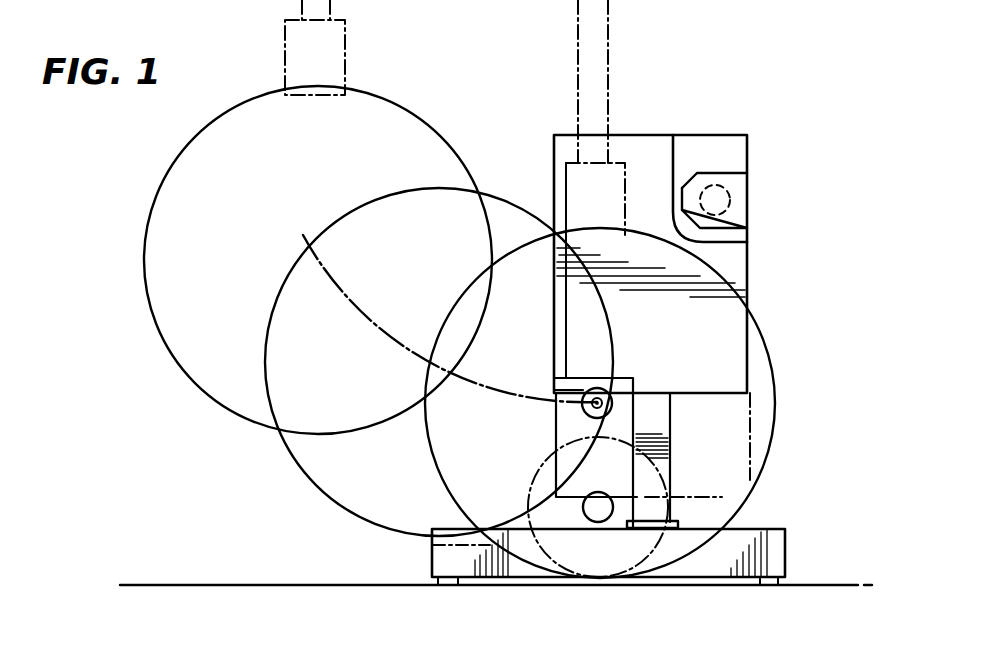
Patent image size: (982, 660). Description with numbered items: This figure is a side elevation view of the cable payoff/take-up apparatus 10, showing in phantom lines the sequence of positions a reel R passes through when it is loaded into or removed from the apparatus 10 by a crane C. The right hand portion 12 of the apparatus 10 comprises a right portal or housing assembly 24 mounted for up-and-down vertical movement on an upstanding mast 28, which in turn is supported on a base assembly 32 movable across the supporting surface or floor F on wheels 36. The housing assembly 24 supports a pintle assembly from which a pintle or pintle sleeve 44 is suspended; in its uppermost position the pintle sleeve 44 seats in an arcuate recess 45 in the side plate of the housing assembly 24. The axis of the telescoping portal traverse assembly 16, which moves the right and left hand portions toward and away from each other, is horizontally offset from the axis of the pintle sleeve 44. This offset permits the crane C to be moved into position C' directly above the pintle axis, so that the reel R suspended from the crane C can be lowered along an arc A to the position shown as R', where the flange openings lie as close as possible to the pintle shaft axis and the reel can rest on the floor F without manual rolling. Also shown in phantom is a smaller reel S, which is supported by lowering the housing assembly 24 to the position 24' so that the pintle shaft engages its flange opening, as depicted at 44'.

The cable payoff/take-up apparatus 10 is at (745, 68).
The right hand portion 12 is at (785, 266).
The telescoping portal traverse assembly 16 is at (736, 185).
The right portal or housing assembly 24 is at (673, 417).
The lowered position of housing assembly 24' is at (728, 449).
The upstanding mast 28 is at (672, 432).
The base assembly 32 is at (775, 548).
The wheels 36 is at (455, 588).
The pintle sleeve 44 is at (620, 381).
The lowered pintle sleeve position 44' is at (597, 528).
The arcuate recess 45 is at (599, 378).
The arc A is at (370, 325).
The crane C is at (330, 47).
The crane position C' is at (605, 189).
The floor F is at (255, 584).
The reel R is at (318, 260).
The reel lowered position R' is at (619, 403).
The smaller reel S is at (666, 579).